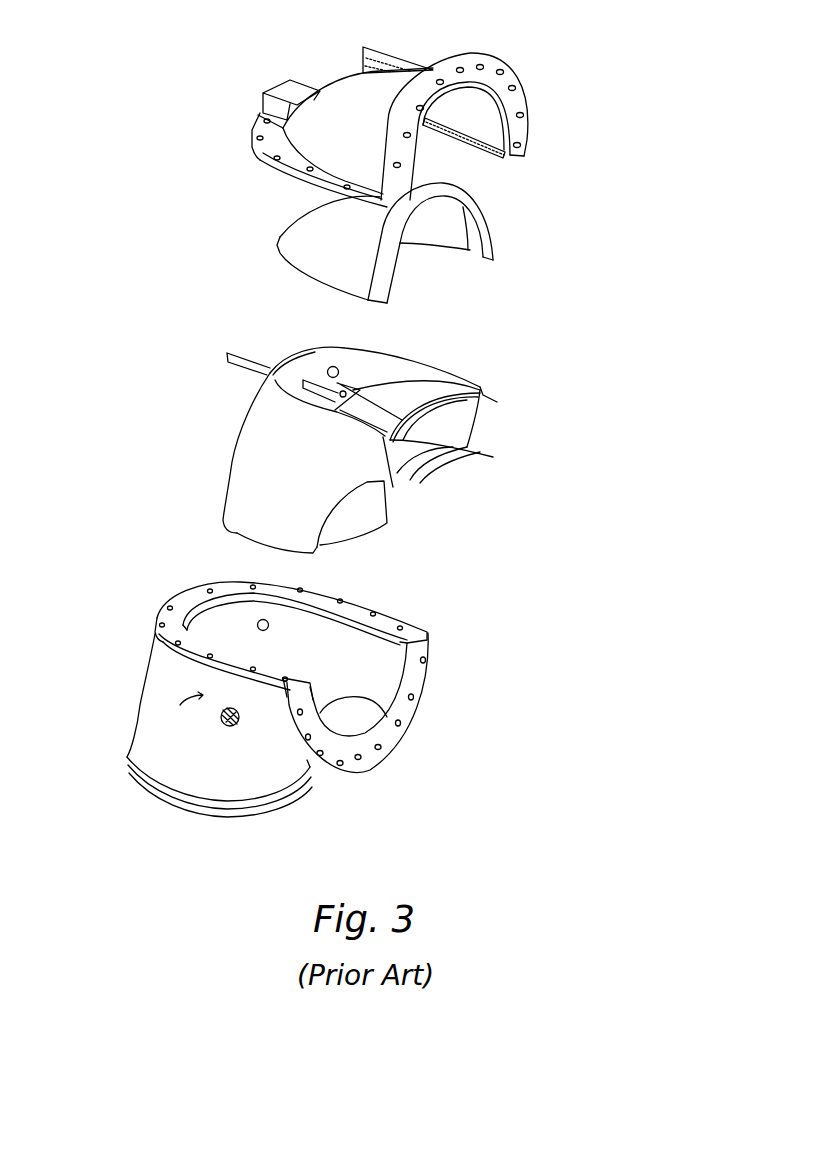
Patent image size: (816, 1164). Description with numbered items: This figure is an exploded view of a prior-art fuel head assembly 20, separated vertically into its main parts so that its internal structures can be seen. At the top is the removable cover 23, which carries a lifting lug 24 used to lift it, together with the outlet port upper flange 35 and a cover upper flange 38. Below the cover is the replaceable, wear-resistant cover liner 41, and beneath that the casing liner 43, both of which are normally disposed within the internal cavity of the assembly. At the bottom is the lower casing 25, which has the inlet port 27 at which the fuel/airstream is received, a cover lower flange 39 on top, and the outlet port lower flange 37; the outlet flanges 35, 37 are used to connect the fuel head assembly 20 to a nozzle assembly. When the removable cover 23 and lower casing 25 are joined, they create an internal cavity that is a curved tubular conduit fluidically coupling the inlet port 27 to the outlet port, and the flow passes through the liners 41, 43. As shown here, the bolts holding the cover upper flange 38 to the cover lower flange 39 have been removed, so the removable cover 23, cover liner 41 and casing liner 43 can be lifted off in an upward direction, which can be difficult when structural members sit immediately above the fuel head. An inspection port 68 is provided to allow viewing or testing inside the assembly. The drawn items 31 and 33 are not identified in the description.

The fuel head assembly 20 is at (614, 159).
The removable cover 23 is at (350, 77).
The lifting lug 24 is at (398, 43).
The lower casing 25 is at (137, 708).
The inlet port 27 is at (143, 796).
The upper guide vane 31 is at (497, 402).
The lower guide vane 33 is at (466, 462).
The outlet port upper flange 35 is at (503, 83).
The outlet port lower flange 37 is at (410, 703).
The cover upper flange 38 is at (257, 154).
The cover lower flange 39 is at (160, 611).
The cover liner 41 is at (494, 232).
The casing liner 43 is at (233, 445).
The inspection port 68 is at (328, 363).